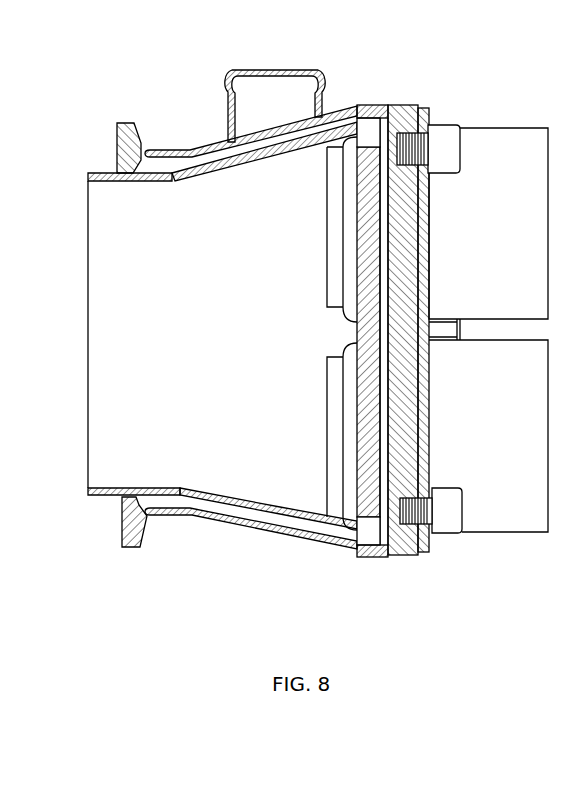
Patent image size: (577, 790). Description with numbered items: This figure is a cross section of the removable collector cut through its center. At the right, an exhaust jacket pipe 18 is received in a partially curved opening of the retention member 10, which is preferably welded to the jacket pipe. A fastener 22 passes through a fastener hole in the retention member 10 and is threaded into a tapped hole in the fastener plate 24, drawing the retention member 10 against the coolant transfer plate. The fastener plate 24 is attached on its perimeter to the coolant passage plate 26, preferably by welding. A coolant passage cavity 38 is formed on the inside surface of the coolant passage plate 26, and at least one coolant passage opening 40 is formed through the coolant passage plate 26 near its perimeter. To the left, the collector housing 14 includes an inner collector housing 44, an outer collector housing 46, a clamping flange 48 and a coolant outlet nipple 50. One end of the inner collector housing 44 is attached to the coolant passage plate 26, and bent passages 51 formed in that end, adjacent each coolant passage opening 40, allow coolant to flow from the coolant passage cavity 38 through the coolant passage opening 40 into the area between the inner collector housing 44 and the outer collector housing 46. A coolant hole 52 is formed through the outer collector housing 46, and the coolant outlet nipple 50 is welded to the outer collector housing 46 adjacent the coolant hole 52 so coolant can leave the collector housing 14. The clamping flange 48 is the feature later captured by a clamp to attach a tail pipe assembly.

The retention member 10 is at (432, 547).
The collector housing 14 is at (258, 532).
The exhaust jacket pipe 18 is at (493, 170).
The fastener 22 is at (443, 145).
The fastener plate 24 is at (413, 556).
The coolant passage plate 26 is at (378, 558).
The coolant passage cavity 38 is at (382, 262).
The coolant passage opening 40 is at (364, 130).
The inner collector housing 44 is at (104, 172).
The outer collector housing 46 is at (208, 143).
The clamping flange 48 is at (129, 122).
The coolant outlet nipple 50 is at (270, 67).
The bent passage 51 is at (325, 524).
The coolant hole 52 is at (260, 141).